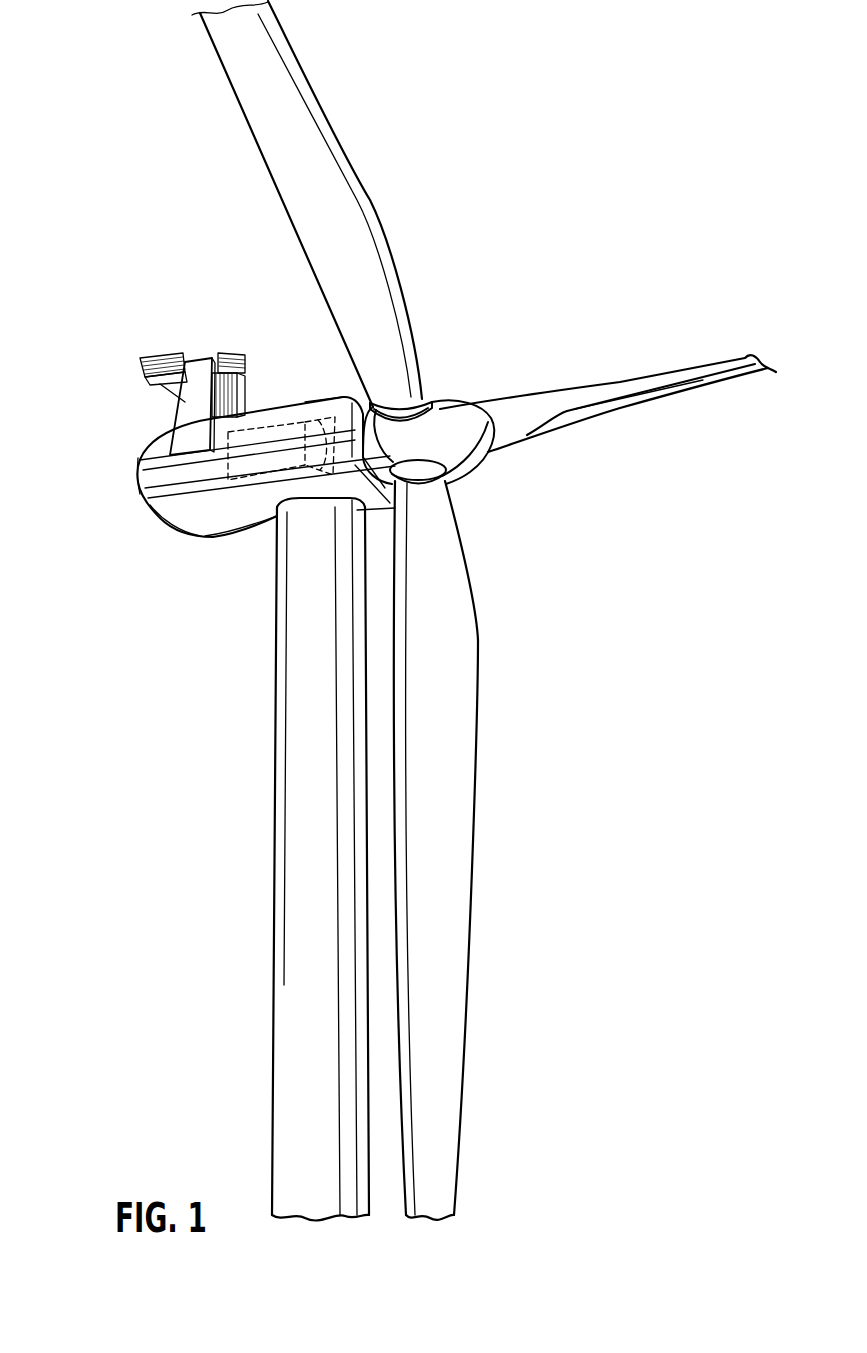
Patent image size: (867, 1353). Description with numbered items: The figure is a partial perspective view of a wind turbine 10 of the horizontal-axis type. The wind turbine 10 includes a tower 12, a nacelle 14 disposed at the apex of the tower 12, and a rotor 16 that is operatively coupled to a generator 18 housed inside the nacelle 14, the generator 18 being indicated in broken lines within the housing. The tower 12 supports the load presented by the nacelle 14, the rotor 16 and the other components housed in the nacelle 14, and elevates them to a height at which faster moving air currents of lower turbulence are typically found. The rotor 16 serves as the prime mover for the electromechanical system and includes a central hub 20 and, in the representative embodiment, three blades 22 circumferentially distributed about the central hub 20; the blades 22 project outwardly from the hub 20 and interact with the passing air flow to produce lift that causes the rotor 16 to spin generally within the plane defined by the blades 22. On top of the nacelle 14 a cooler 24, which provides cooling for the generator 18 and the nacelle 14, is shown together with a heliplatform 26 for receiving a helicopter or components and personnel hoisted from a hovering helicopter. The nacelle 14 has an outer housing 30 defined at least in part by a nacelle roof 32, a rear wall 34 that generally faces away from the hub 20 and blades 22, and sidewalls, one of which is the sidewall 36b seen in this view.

The wind turbine 10 is at (514, 229).
The tower 12 is at (274, 697).
The nacelle 14 is at (151, 436).
The rotor 16 is at (476, 468).
The generator 18 is at (243, 490).
The central hub 20 is at (446, 404).
The blade 22 is at (236, 98).
The cooler 24 is at (246, 394).
The heliplatform 26 is at (146, 354).
The outer housing 30 is at (185, 526).
The nacelle roof 32 is at (305, 402).
The rear wall 34 is at (140, 467).
The sidewall 36b is at (192, 477).